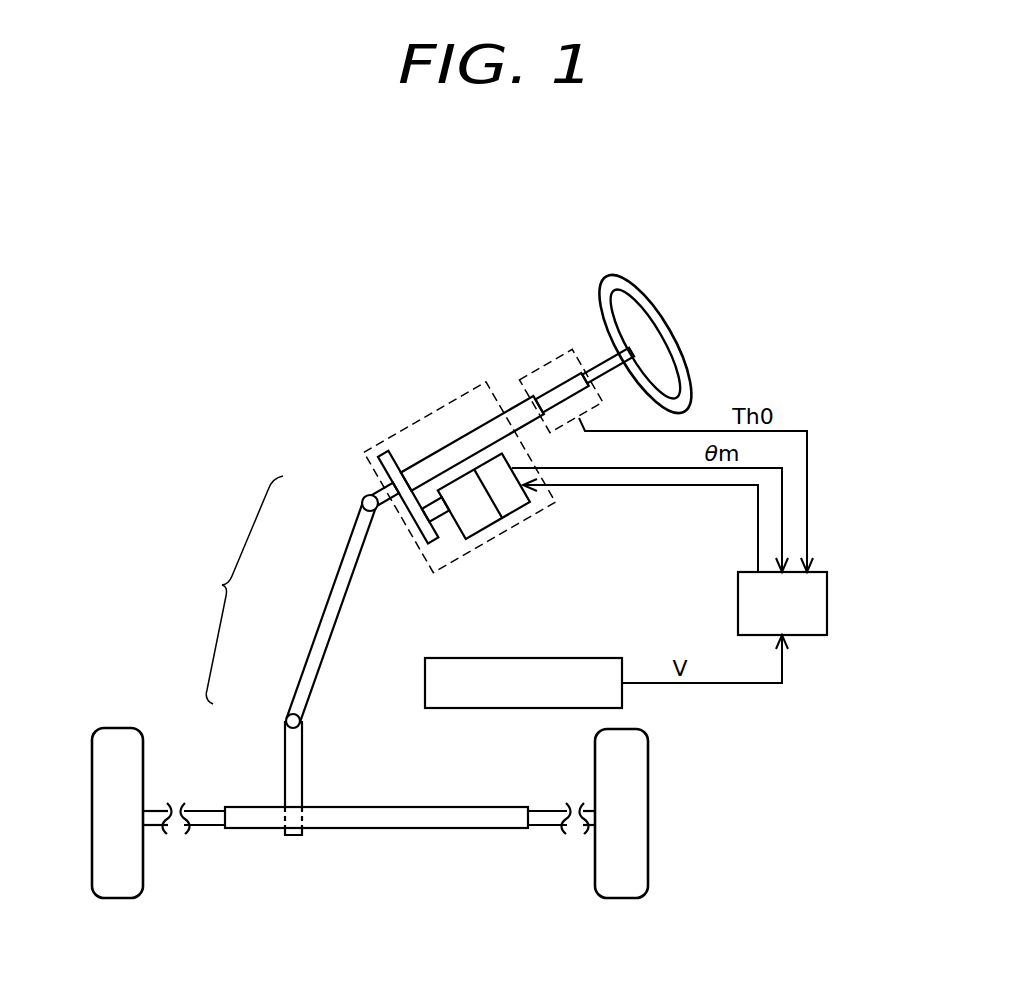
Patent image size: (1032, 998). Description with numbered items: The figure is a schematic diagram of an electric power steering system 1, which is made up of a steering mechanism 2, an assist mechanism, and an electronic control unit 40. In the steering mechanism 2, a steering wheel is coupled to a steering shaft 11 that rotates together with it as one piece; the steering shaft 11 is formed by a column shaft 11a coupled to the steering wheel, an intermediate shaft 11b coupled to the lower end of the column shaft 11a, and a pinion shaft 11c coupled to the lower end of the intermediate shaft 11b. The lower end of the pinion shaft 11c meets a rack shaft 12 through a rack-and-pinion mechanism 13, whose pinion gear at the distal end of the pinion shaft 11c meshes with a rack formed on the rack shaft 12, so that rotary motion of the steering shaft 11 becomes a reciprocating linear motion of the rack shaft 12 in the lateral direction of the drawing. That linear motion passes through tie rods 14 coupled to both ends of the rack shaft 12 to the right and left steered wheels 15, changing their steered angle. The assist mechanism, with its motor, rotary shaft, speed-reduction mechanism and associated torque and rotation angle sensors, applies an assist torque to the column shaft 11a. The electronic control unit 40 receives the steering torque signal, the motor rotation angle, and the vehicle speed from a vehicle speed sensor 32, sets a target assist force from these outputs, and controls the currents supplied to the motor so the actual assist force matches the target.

The electric power steering system 1 is at (157, 350).
The steering mechanism 2 is at (193, 507).
The steering shaft 11 is at (235, 590).
The column shaft 11a is at (361, 491).
The intermediate shaft 11b is at (322, 598).
The pinion shaft 11c is at (284, 727).
The rack shaft 12 is at (450, 830).
The rack-and-pinion mechanism 13 is at (275, 801).
The tie rod 14 is at (205, 826).
The steered wheel 15 is at (118, 899).
The vehicle speed sensor 32 is at (537, 659).
The electronic control unit 40 is at (829, 604).